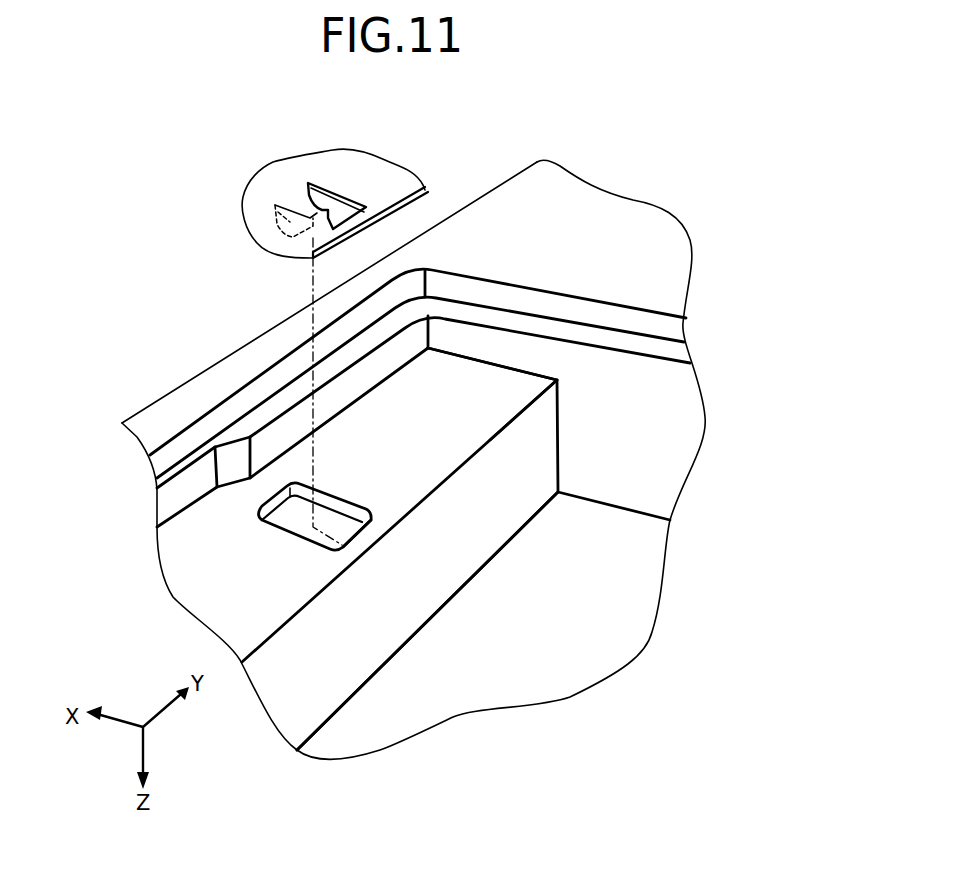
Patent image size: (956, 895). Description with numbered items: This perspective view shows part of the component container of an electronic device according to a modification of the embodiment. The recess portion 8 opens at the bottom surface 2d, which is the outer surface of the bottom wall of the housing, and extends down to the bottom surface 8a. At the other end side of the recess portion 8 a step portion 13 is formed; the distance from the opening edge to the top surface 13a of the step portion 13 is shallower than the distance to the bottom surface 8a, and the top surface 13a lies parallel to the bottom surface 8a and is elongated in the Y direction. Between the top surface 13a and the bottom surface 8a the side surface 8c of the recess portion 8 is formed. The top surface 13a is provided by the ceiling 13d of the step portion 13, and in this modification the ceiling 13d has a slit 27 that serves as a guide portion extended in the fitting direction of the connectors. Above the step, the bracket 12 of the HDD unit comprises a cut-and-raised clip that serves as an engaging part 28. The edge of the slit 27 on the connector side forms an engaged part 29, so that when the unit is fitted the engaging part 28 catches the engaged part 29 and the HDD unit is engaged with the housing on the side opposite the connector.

The bottom surface 2d is at (513, 204).
The recess portion 8 is at (648, 388).
The bottom surface 8a is at (417, 716).
The side surface 8c is at (410, 615).
The bracket 12 is at (263, 217).
The step portion 13 is at (208, 531).
The top surface 13a is at (534, 337).
The ceiling 13d is at (500, 388).
The slit 27 is at (343, 511).
The engaging part 28 is at (318, 206).
The engaged part 29 is at (368, 538).